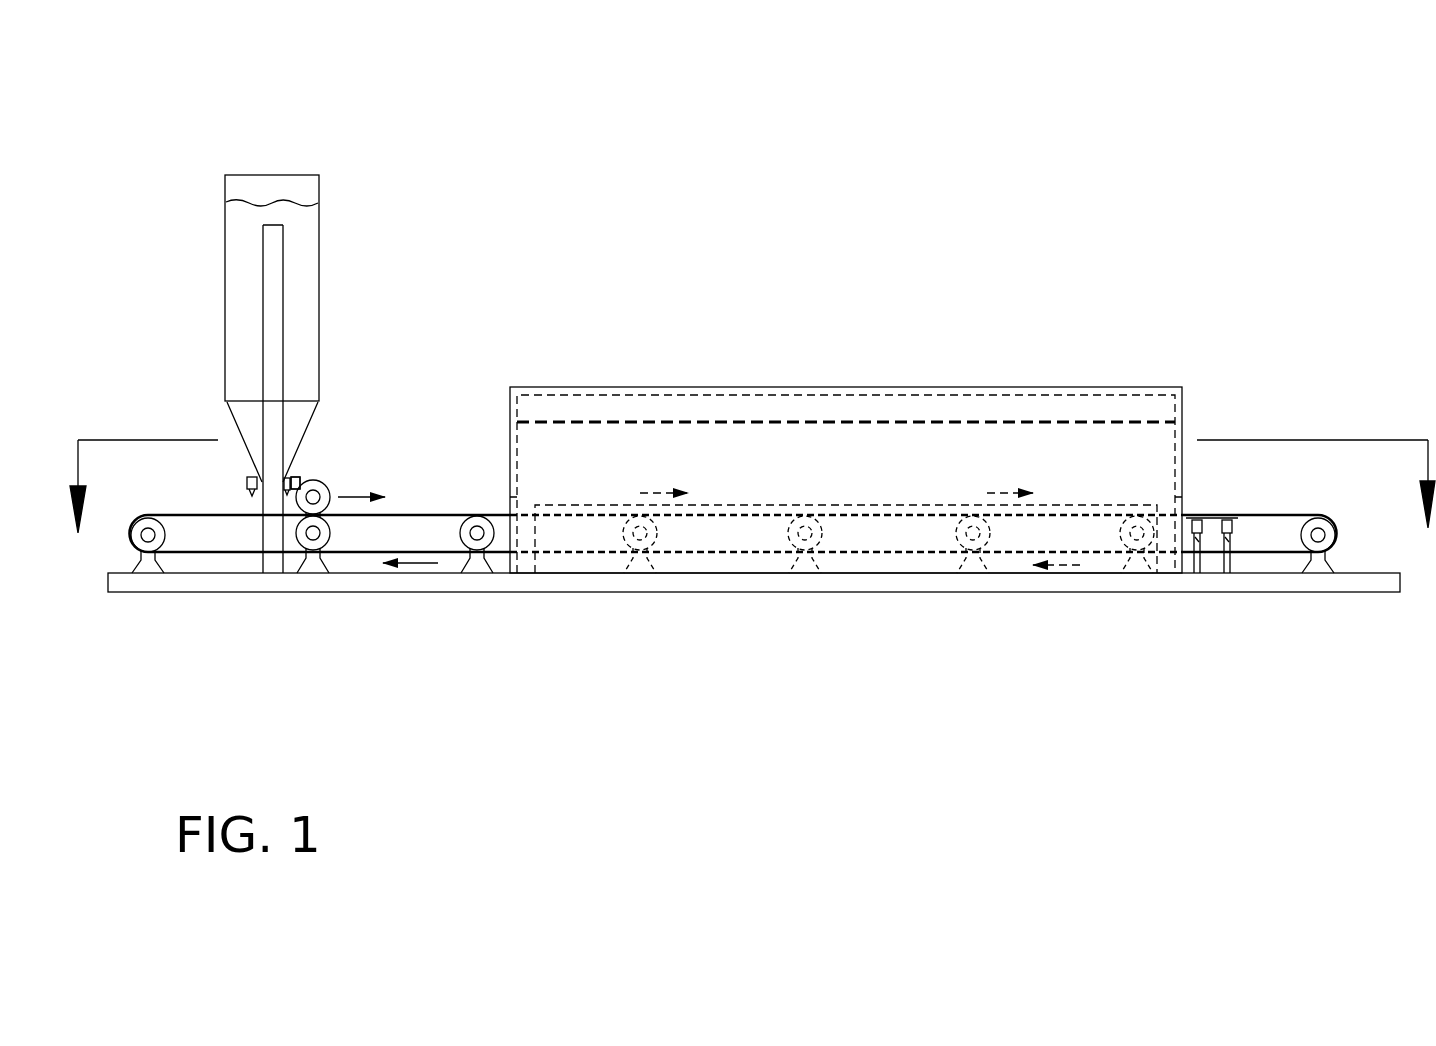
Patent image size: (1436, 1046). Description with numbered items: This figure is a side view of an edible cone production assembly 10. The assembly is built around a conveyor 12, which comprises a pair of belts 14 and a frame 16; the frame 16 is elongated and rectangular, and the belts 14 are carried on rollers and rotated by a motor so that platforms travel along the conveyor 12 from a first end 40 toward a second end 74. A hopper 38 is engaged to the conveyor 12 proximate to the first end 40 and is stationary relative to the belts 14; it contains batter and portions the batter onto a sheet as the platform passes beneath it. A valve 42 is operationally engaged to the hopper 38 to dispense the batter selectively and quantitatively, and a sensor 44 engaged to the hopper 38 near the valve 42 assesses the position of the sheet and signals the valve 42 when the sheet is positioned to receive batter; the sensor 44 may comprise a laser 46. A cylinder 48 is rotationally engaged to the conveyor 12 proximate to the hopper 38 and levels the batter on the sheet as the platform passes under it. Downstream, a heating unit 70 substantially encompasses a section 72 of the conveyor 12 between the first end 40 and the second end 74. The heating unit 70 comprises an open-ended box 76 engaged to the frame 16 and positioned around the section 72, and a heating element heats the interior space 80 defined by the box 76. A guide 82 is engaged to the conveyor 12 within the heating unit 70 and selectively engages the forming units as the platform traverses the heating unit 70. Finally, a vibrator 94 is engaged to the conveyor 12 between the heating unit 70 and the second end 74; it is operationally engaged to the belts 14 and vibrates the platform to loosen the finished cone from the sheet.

The edible cone production assembly 10 is at (724, 142).
The conveyor 12 is at (463, 555).
The pair of belts 14 is at (1261, 511).
The frame 16 is at (1250, 582).
The hopper 38 is at (326, 280).
The first end 40 is at (129, 513).
The valve 42 is at (253, 476).
The sensor 44 is at (306, 462).
The laser 46 is at (295, 483).
The cylinder 48 is at (337, 477).
The heating unit 70 is at (846, 412).
The section 72 is at (1170, 536).
The second end 74 is at (1344, 532).
The box 76 is at (665, 384).
The interior space 80 is at (739, 454).
The guide 82 is at (906, 539).
The vibrator 94 is at (1211, 537).